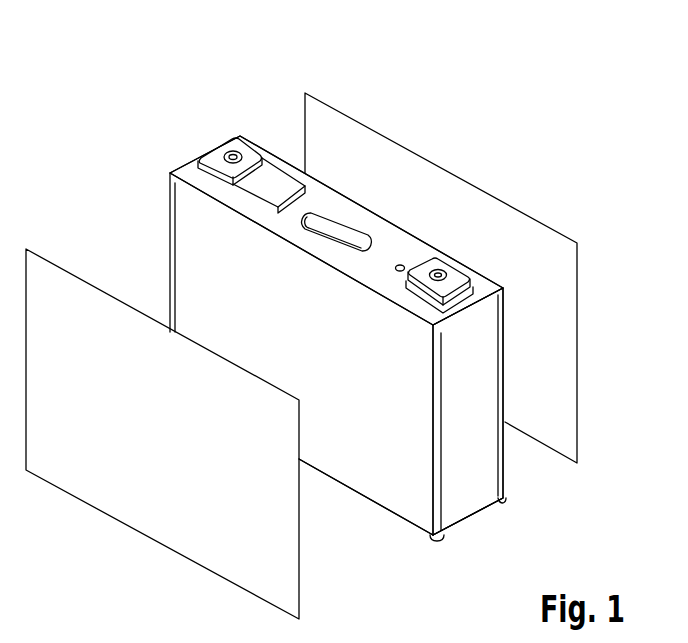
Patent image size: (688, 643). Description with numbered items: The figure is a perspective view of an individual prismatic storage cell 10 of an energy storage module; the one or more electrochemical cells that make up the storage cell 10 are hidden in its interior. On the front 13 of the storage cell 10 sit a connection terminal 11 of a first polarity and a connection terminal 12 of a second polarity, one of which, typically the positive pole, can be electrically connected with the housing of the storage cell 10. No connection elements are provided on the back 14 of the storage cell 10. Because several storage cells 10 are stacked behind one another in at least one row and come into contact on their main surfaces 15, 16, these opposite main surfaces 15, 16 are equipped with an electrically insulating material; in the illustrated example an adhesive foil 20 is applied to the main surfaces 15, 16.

The storage cell 10 is at (153, 74).
The connection terminal of a first polarity 11 is at (220, 150).
The connection terminal of a second polarity 12 is at (455, 280).
The front 13 is at (394, 246).
The back 14 is at (404, 527).
The main surface 15 is at (359, 468).
The main surface 16 is at (512, 389).
The adhesive foil 20 is at (47, 257).